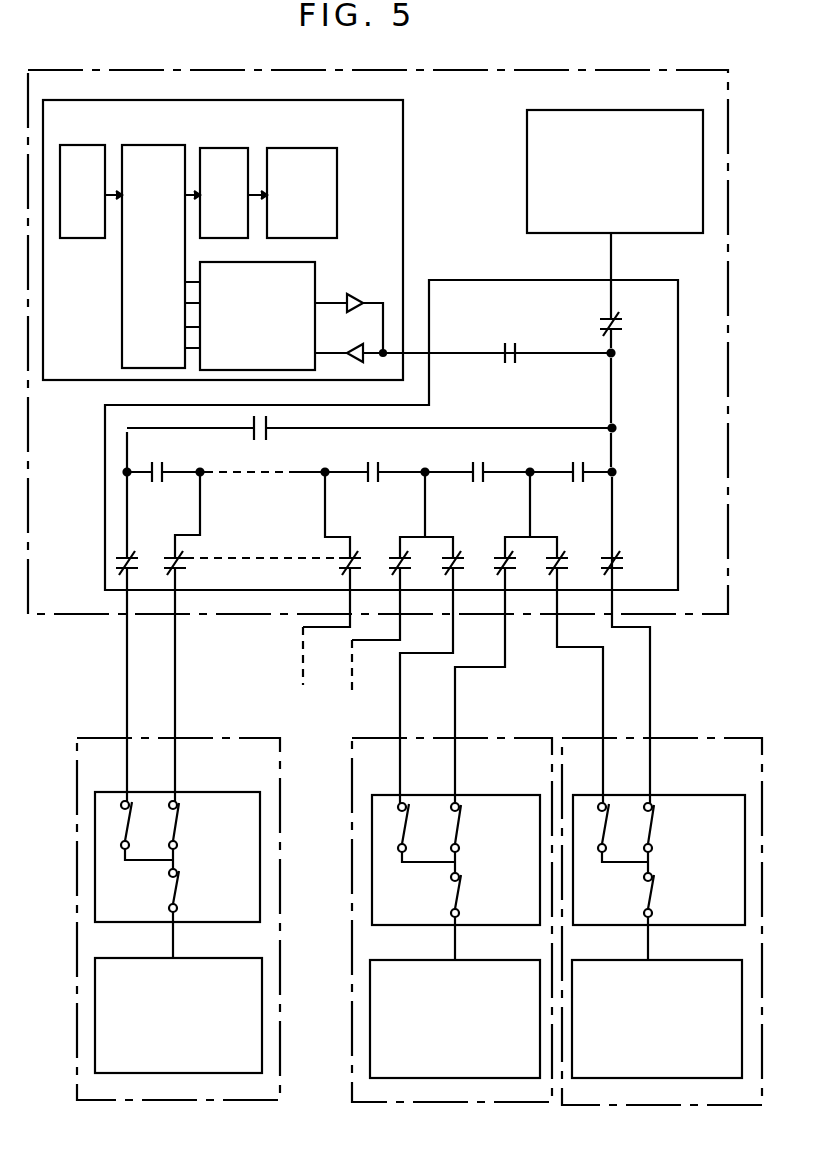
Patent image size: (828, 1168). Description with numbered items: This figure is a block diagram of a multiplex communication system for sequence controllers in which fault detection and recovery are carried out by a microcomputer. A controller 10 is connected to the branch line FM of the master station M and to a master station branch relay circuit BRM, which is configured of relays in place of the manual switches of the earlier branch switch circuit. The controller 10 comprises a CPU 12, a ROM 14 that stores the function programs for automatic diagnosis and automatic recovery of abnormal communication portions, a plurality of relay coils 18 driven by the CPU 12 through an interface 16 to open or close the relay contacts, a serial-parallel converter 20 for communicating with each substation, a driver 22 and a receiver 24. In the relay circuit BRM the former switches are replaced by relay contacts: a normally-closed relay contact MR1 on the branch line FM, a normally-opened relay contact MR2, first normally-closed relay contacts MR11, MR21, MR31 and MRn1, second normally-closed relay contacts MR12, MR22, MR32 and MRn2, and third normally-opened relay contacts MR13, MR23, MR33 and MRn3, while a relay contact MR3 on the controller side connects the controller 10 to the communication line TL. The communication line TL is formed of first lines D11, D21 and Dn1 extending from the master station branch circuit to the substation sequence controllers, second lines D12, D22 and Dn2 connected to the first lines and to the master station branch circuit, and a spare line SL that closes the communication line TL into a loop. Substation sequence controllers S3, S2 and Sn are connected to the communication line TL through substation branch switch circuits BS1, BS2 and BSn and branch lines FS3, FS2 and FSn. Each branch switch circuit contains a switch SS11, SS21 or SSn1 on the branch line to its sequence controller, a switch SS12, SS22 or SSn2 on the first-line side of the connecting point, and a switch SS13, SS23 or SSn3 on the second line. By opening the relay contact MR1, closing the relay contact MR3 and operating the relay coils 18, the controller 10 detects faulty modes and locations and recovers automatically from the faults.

The controller 10 is at (404, 101).
The CPU 12 is at (127, 128).
The ROM 14 is at (66, 128).
The interface 16 is at (206, 128).
The relay coils 18 is at (272, 128).
The serial-parallel converter 20 is at (316, 263).
The driver 22 is at (353, 293).
The receiver 24 is at (352, 344).
The master sequence controller M is at (527, 113).
The master station branch relay circuit BRM is at (430, 280).
The normally-closed relay contact MR1 is at (606, 316).
The relay contact MR3 is at (505, 343).
The branch line FM is at (616, 354).
The spare line SL is at (452, 427).
The communication line TL is at (662, 423).
The normally-opened relay contact MR2 is at (257, 441).
The third normally-opened relay contact MRn3 is at (170, 455).
The third normally-opened relay contact MR33 is at (368, 463).
The third normally-opened relay contact MR23 is at (472, 462).
The third normally-opened relay contact MR13 is at (572, 462).
The second normally-closed relay contact MRn2 is at (161, 511).
The first normally-closed relay contact MRn1 is at (184, 568).
The second normally-closed relay contact MR32 is at (350, 548).
The first normally-closed relay contact MR31 is at (400, 550).
The second normally-closed relay contact MR22 is at (455, 550).
The first normally-closed relay contact MR21 is at (498, 560).
The second normally-closed relay contact MR12 is at (564, 555).
The first normally-closed relay contact MR11 is at (623, 567).
The second line Dn2 is at (125, 680).
The first line Dn1 is at (178, 680).
The second line D22 is at (400, 672).
The first line D21 is at (458, 690).
The second line D12 is at (601, 670).
The first line D11 is at (652, 700).
The substation branch switch circuit BSn is at (258, 792).
The substation branch switch circuit BS2 is at (538, 795).
The substation branch switch circuit BS1 is at (743, 795).
The switch SSn3 is at (122, 832).
The switch SSn2 is at (177, 832).
The switch SSn1 is at (177, 894).
The switch SS23 is at (400, 834).
The switch SS22 is at (458, 835).
The switch SS21 is at (458, 897).
The switch SS13 is at (600, 834).
The switch SS12 is at (652, 835).
The switch SS11 is at (652, 897).
The branch line FSn is at (173, 937).
The branch line FS2 is at (455, 939).
The branch line FS3 is at (648, 939).
The substation sequence controller Sn is at (261, 957).
The substation sequence controller S2 is at (539, 959).
The substation sequence controller S3 is at (741, 959).